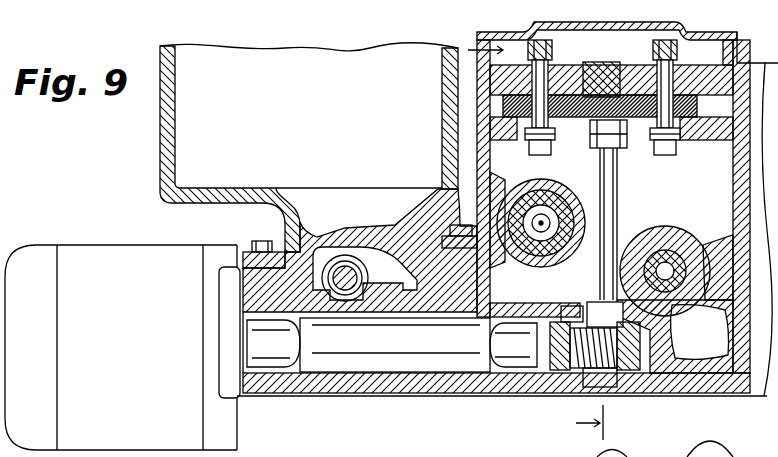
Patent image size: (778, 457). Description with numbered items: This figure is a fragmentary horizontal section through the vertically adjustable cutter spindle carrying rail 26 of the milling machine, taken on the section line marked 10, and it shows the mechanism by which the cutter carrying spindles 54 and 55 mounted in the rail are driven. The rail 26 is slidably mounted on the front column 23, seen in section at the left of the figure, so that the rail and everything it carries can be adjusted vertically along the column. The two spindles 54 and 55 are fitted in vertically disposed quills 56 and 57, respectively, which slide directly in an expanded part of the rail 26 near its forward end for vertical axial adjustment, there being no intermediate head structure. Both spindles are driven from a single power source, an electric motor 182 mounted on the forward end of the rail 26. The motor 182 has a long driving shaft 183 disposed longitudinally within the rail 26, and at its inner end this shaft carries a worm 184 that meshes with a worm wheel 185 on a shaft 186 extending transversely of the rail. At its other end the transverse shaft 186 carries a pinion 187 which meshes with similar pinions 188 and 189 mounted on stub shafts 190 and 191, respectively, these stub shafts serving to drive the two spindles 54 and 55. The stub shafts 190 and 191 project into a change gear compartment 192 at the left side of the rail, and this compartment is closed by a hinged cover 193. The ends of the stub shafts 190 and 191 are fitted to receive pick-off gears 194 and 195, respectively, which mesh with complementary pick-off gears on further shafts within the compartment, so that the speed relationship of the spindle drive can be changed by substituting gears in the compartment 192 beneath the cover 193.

The section line 10 is at (546, 243).
The front column 23 is at (164, 103).
The cutter spindle carrying rail 26 is at (340, 380).
The cutter carrying spindle 54 is at (533, 237).
The cutter carrying spindle 55 is at (700, 232).
The quill 56 is at (558, 243).
The quill 57 is at (642, 247).
The electric motor 182 is at (108, 265).
The driving shaft 183 is at (288, 347).
The worm 184 is at (568, 314).
The worm wheel 185 is at (605, 349).
The shaft 186 is at (608, 158).
The pinion 187 is at (583, 134).
The pinion 188 is at (517, 140).
The pinion 189 is at (678, 143).
The stub shaft 190 is at (552, 67).
The stub shaft 191 is at (673, 62).
The change gear compartment 192 is at (477, 50).
The hinged cover 193 is at (687, 28).
The pick-off gear 194 is at (552, 46).
The pick-off gear 195 is at (650, 46).